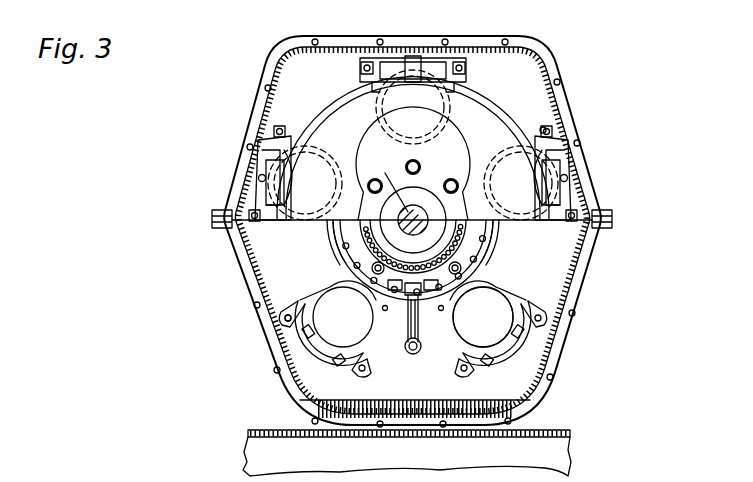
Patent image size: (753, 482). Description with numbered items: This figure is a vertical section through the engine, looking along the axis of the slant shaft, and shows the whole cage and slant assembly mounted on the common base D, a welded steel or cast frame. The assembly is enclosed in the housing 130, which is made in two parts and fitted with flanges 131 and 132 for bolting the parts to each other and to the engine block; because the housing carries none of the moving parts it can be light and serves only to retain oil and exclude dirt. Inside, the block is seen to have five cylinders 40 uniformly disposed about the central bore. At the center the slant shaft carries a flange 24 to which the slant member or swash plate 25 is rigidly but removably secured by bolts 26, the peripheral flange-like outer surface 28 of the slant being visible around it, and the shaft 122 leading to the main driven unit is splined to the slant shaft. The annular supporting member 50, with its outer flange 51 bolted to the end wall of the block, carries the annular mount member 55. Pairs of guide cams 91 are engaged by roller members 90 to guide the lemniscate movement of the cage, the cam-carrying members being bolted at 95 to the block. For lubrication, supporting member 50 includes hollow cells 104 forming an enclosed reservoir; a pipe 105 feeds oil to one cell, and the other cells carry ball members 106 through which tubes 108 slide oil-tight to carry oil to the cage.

The flange 24 is at (440, 176).
The slant member 25 is at (474, 115).
The bolts 26 is at (413, 160).
The outer surface 28 is at (342, 104).
The cylinders 40 is at (328, 306).
The annular supporting member 50 is at (360, 224).
The outer flange 51 is at (337, 241).
The annular mount member 55 is at (467, 237).
The roller members 90 is at (418, 66).
The cam members 91 is at (393, 66).
The bolts 95 is at (541, 127).
The cells 104 is at (464, 268).
The pipe 105 is at (420, 338).
The ball member 106 is at (483, 317).
The tube 108 is at (368, 270).
The shaft 122 is at (386, 174).
The housing 130 is at (528, 53).
The flanges 131 is at (276, 70).
The flanges 132 is at (612, 216).
The common base D is at (239, 459).